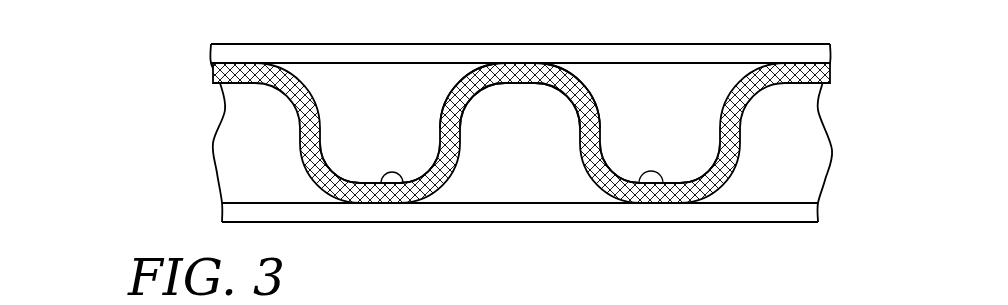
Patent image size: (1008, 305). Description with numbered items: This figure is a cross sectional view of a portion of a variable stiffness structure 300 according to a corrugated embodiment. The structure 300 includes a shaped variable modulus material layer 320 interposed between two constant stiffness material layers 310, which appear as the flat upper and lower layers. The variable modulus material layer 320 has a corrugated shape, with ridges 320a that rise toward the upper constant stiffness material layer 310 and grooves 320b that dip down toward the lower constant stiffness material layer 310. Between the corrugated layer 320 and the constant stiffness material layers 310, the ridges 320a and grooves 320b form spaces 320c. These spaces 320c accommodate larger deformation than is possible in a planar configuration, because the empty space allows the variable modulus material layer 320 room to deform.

The variable stiffness structure 300 is at (196, 50).
The constant stiffness material layer 310 is at (807, 50).
The variable modulus material layer 320 is at (815, 82).
The ridge 320a is at (513, 62).
The groove 320b is at (405, 184).
The space 320c is at (380, 115).